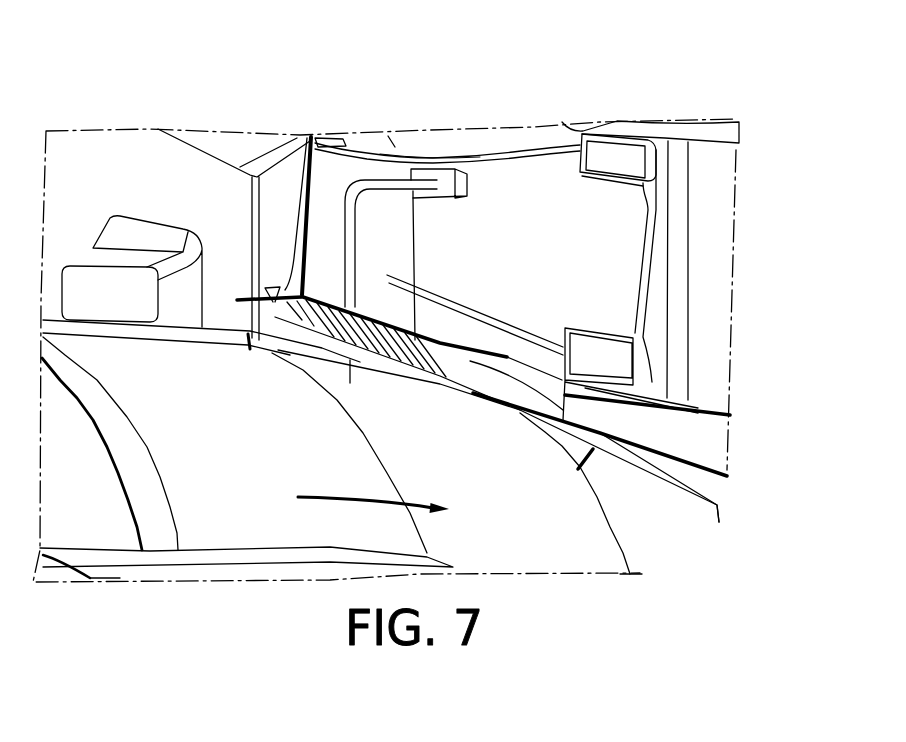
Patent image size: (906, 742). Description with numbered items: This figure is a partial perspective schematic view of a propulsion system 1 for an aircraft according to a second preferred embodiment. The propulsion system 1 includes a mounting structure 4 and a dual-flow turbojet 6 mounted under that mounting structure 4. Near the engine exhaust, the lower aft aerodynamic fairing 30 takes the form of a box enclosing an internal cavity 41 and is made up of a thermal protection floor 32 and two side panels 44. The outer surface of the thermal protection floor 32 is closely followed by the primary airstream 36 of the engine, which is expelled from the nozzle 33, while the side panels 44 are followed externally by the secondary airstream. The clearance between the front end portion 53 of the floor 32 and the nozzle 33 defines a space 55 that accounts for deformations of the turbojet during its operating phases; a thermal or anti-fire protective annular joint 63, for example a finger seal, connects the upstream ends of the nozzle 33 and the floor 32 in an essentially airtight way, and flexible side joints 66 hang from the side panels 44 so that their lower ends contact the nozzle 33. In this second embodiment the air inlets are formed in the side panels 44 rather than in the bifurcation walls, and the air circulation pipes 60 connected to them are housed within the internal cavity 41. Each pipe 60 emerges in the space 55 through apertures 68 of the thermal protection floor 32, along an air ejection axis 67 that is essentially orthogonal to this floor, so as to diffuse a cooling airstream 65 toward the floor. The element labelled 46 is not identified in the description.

The propulsion system 1 is at (408, 115).
The mounting structure 4 is at (690, 118).
The dual-flow turbojet 6 is at (90, 118).
The lower aft aerodynamic fairing 30 is at (712, 159).
The thermal protection floor 32 is at (722, 521).
The nozzle 33 is at (627, 555).
The primary airstream 36 is at (336, 494).
The internal cavity 41 is at (461, 234).
The side panels 44 is at (720, 345).
The post 46 is at (658, 250).
The front end portion 53 is at (450, 352).
The space 55 is at (413, 369).
The air circulation pipe 60 is at (367, 179).
The annular joint 63 is at (327, 294).
The cooling airstream 65 is at (319, 189).
The flexible side joints 66 is at (576, 443).
The air ejection axis 67 is at (350, 383).
The apertures 68 is at (353, 307).